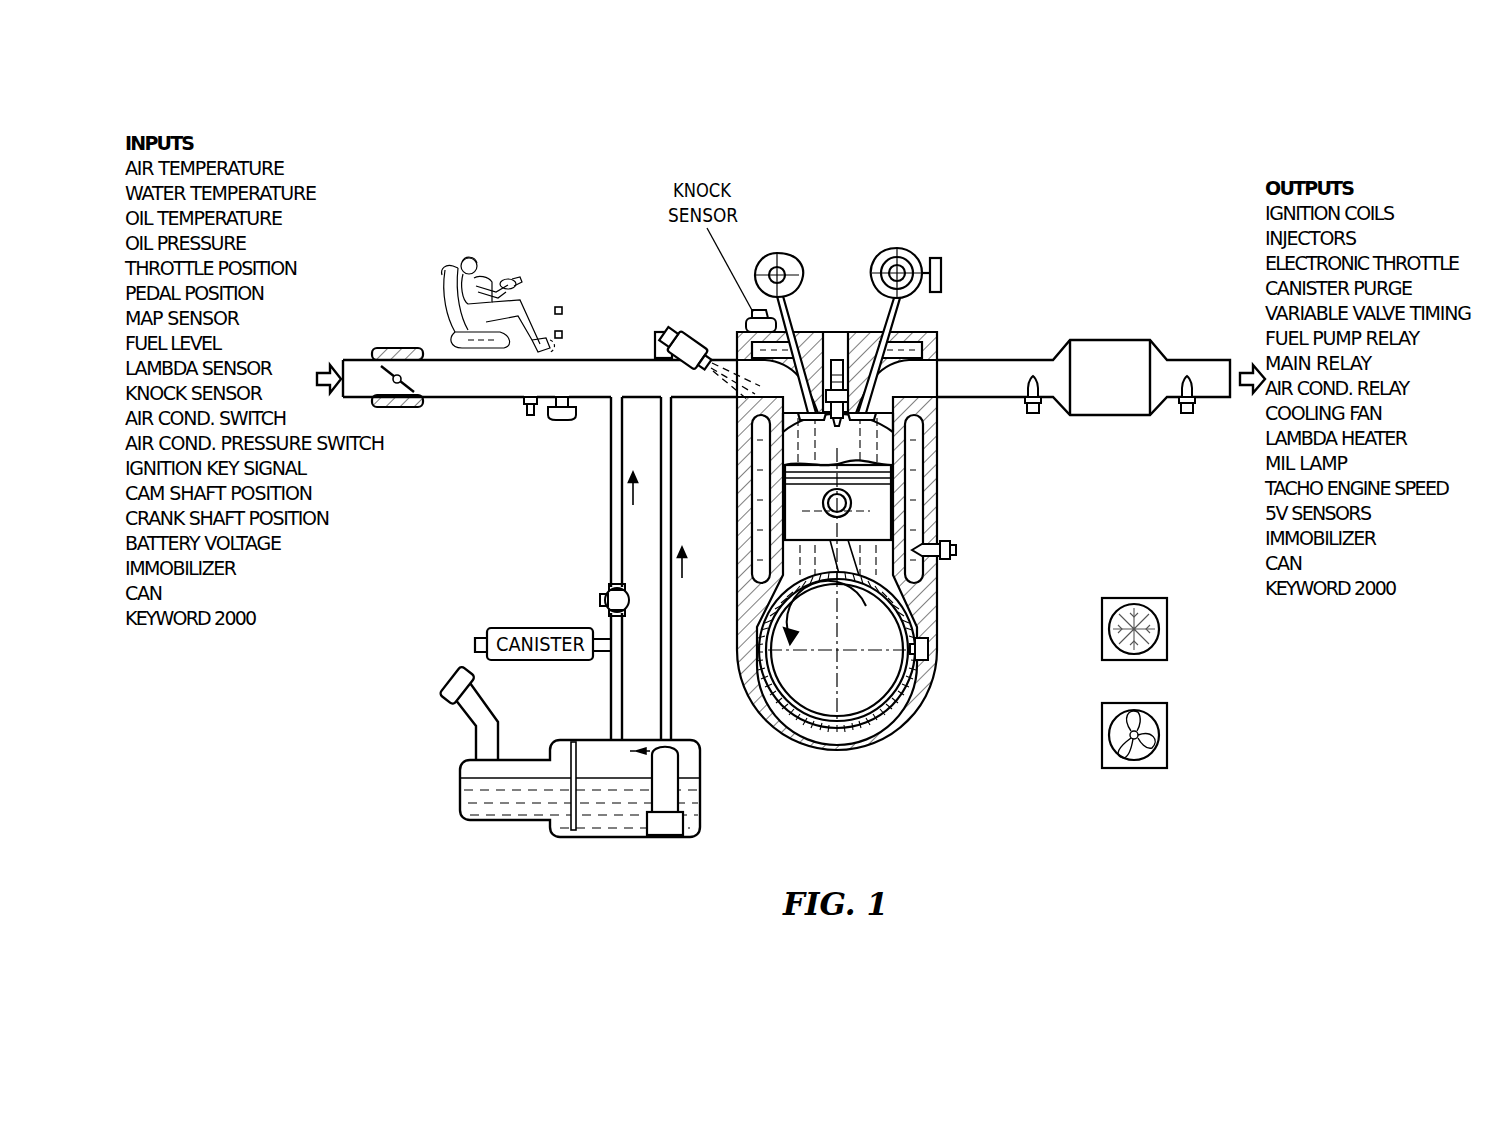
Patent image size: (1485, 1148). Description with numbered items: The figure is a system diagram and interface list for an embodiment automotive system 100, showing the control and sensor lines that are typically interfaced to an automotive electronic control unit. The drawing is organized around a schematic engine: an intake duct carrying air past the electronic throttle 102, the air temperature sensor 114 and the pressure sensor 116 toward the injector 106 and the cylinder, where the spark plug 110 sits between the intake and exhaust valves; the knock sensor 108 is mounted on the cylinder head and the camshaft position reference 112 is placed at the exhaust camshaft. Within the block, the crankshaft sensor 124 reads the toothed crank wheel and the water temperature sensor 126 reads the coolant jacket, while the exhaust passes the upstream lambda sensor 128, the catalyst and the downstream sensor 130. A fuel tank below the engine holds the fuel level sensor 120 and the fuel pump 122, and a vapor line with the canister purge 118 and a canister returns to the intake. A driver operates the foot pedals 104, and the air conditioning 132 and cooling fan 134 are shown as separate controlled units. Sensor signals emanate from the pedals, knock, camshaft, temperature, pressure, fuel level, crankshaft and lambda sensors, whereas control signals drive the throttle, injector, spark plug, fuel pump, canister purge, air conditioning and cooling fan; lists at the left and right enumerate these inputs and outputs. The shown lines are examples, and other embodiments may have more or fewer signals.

The automotive system 100 is at (1072, 160).
The electronic throttle 102 is at (390, 348).
The foot pedals 104 is at (596, 300).
The injector 106 is at (680, 330).
The knock sensor 108 is at (779, 252).
The spark plug 110 is at (837, 360).
The camshaft position reference 112 is at (905, 250).
The air temperature sensor 114 is at (517, 402).
The pressure sensor 116 is at (561, 422).
The canister purge 118 is at (598, 598).
The fuel level sensor 120 is at (569, 793).
The fuel pump 122 is at (681, 795).
The crankshaft sensor 124 is at (930, 665).
The water temperature sensor 126 is at (952, 560).
The upstream lambda sensor 128 is at (1033, 415).
The downstream sensor 130 is at (1187, 415).
The air conditioning 132 is at (1169, 630).
The cooling fan 134 is at (1169, 736).